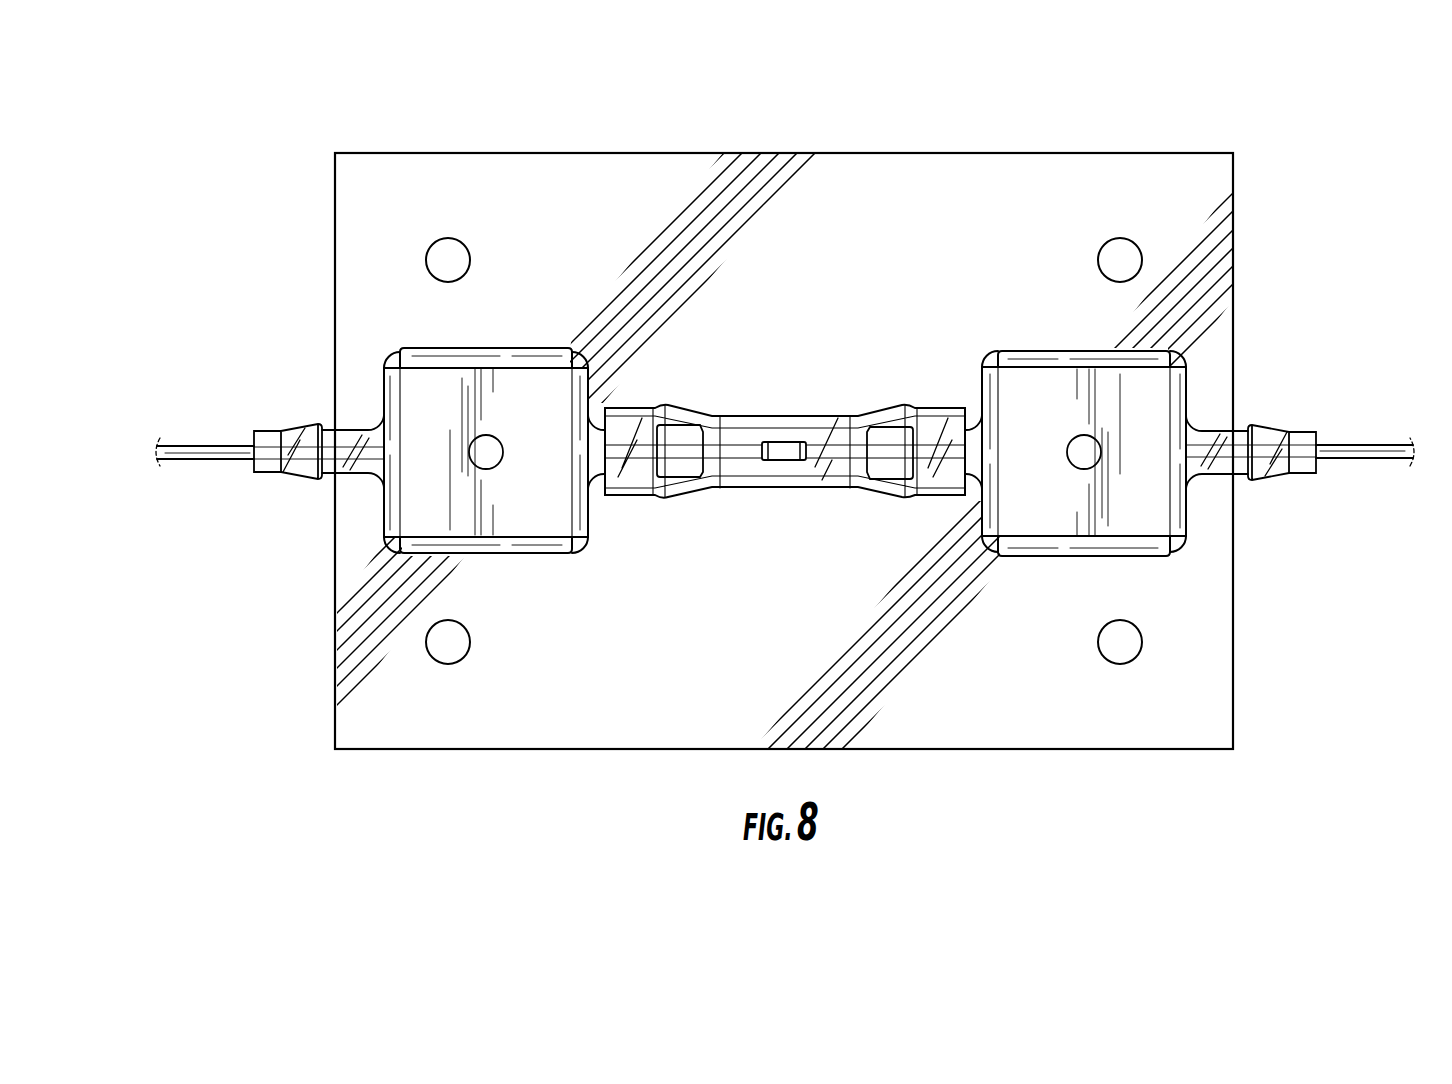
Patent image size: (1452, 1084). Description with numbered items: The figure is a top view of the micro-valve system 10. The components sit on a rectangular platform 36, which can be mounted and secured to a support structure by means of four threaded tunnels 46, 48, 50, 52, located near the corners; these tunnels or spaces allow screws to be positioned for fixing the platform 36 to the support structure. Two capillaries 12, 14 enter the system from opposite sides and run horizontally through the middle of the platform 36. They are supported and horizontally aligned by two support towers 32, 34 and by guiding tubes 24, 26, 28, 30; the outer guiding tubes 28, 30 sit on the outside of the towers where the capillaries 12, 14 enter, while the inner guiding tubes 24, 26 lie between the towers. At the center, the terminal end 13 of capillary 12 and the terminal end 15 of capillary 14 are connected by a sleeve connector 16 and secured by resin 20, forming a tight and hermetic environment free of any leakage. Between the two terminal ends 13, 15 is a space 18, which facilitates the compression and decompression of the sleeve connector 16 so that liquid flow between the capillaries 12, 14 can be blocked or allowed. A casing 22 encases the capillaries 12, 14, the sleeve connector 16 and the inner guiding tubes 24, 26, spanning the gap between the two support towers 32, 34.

The micro-valve system 10 is at (925, 88).
The capillary 12 is at (212, 444).
The terminal end 13 is at (755, 467).
The capillary 14 is at (1353, 443).
The terminal end 15 is at (808, 462).
The sleeve connector 16 is at (788, 443).
The space 18 is at (782, 461).
The resin 20 is at (765, 443).
The casing 22 is at (838, 476).
The guiding tube 24 is at (678, 428).
The guiding tube 26 is at (892, 438).
The guiding tube 28 is at (288, 470).
The guiding tube 30 is at (1282, 473).
The support tower 32 is at (513, 525).
The support tower 34 is at (1036, 525).
The platform 36 is at (1233, 659).
The threaded tunnel 46 is at (448, 237).
The threaded tunnel 48 is at (448, 665).
The threaded tunnel 50 is at (1120, 238).
The threaded tunnel 52 is at (1120, 665).